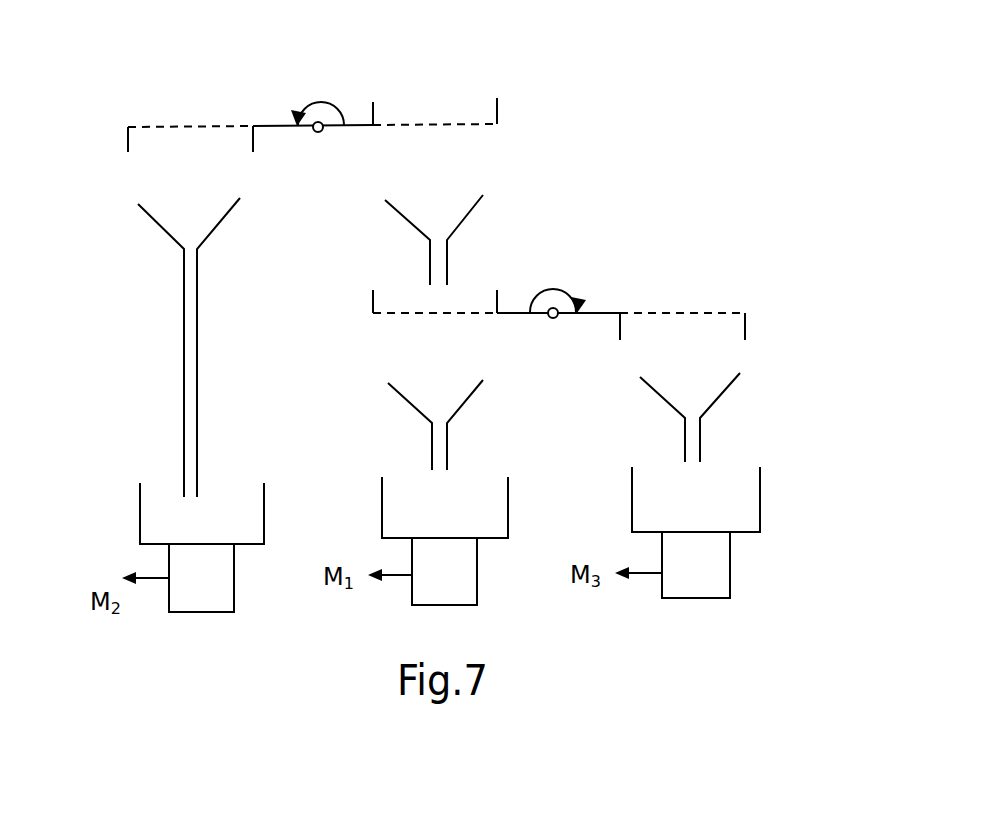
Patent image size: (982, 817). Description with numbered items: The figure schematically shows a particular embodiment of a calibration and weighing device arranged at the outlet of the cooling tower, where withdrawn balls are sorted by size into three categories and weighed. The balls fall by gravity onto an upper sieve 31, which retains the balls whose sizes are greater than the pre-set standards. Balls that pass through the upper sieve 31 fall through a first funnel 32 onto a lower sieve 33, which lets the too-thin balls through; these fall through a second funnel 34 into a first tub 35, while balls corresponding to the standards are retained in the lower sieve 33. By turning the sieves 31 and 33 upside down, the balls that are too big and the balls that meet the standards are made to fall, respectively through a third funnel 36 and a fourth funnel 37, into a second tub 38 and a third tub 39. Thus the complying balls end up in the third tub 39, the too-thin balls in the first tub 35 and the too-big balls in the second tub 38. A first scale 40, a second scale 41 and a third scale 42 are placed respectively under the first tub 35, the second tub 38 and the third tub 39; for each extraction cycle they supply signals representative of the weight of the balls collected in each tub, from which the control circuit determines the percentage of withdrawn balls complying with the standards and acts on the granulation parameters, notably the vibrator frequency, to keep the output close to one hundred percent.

The upper sieve 31 is at (457, 124).
The first funnel 32 is at (470, 210).
The lower sieve 33 is at (413, 313).
The second funnel 34 is at (400, 400).
The first tub 35 is at (508, 488).
The third funnel 36 is at (223, 220).
The fourth funnel 37 is at (720, 395).
The second tub 38 is at (264, 498).
The third tub 39 is at (760, 487).
The first scale 40 is at (473, 588).
The second scale 41 is at (237, 593).
The third scale 42 is at (727, 583).